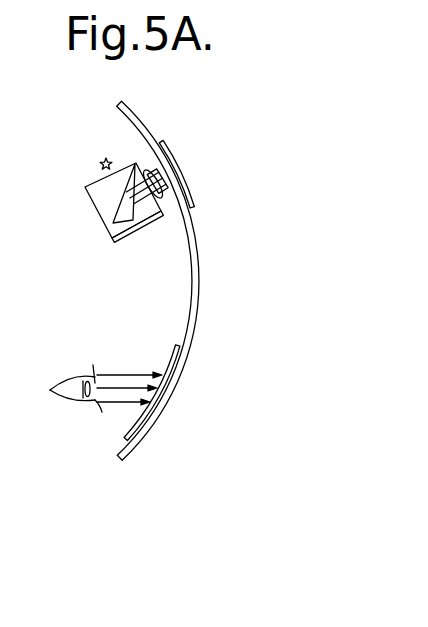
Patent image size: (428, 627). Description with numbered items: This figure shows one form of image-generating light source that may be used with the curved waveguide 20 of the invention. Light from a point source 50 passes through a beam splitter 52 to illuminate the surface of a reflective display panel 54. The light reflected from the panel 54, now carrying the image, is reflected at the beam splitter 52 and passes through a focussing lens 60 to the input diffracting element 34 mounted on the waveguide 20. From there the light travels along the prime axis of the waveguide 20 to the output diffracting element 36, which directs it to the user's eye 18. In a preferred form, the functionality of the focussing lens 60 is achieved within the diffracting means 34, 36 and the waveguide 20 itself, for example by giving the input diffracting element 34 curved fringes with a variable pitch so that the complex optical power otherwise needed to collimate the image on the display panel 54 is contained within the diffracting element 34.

The user's eye 18 is at (74, 399).
The waveguide 20 is at (193, 273).
The input diffracting element 34 is at (187, 187).
The output diffracting element 36 is at (175, 357).
The point source 50 is at (100, 160).
The beam splitter 52 is at (108, 205).
The reflective display panel 54 is at (130, 244).
The focussing lens 60 is at (161, 200).